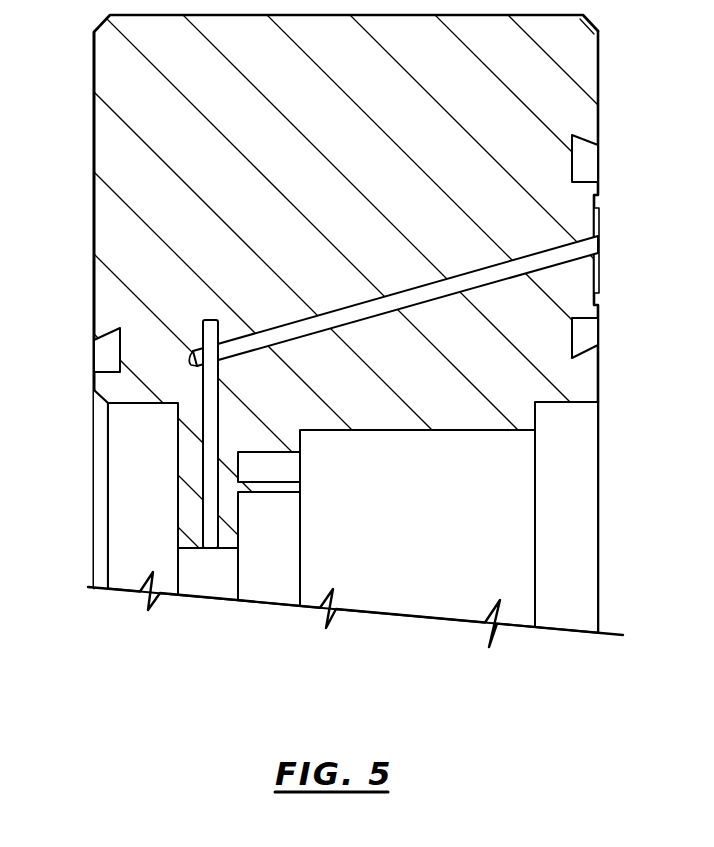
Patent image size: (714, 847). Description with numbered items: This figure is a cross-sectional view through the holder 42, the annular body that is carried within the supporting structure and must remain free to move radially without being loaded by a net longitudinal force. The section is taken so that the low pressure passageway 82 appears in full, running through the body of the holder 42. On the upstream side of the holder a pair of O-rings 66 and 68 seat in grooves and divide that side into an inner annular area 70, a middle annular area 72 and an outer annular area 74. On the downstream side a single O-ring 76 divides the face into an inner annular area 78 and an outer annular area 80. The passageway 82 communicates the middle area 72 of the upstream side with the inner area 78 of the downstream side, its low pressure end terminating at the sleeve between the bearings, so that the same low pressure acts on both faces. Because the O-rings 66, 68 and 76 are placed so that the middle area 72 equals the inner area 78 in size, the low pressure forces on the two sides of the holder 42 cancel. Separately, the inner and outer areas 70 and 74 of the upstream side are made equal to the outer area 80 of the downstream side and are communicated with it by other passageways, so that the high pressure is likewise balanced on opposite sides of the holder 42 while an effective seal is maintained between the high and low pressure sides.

The holder 42 is at (356, 153).
The O-ring 66 is at (598, 164).
The O-ring 68 is at (598, 335).
The inner annular area 70 is at (598, 385).
The middle annular area 72 is at (598, 252).
The outer annular area 74 is at (598, 97).
The O-ring 76 is at (93, 350).
The inner annular area 78 is at (94, 384).
The outer annular area 80 is at (93, 131).
The passageway 82 is at (415, 295).